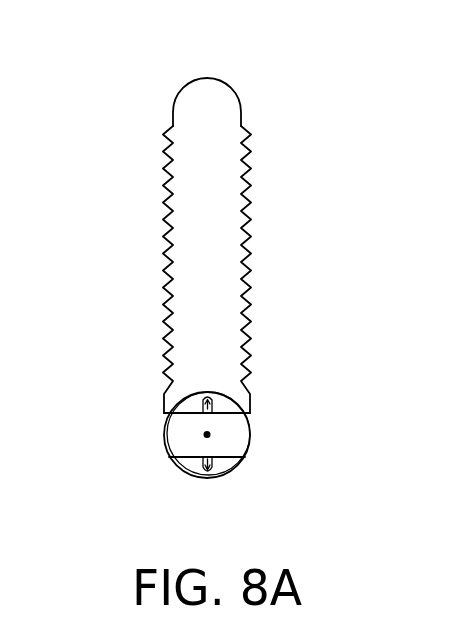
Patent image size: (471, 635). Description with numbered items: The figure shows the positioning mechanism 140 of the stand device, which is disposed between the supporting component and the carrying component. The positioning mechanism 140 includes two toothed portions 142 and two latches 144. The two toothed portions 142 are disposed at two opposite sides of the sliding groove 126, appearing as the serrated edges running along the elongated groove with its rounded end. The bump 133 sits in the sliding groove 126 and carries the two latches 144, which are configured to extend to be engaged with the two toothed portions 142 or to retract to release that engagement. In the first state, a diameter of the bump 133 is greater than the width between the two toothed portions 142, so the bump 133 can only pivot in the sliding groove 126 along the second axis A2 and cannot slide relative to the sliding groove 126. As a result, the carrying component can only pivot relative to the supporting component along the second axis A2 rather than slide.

The positioning mechanism 140 is at (160, 77).
The sliding groove 126 is at (237, 94).
The toothed portions 142 is at (172, 228).
The bump 133 is at (242, 460).
The latches 144 is at (211, 396).
The second axis A2 is at (203, 434).